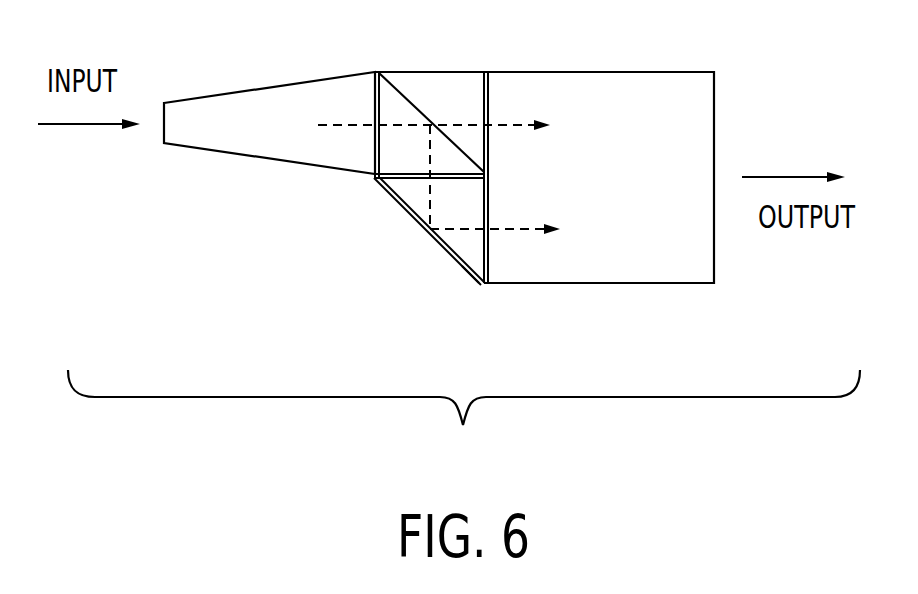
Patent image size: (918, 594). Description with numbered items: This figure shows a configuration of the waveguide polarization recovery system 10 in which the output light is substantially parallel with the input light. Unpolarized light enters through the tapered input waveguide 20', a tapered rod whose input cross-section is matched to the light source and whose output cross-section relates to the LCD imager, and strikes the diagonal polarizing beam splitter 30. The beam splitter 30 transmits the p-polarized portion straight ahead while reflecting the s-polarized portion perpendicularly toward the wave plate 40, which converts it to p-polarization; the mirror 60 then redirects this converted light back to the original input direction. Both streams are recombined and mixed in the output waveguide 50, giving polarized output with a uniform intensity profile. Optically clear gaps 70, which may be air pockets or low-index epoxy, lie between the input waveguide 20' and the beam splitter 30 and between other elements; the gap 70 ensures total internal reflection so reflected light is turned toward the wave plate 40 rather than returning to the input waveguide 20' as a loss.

The waveguide polarization recovery system 10 is at (464, 422).
The tapered input waveguide 20' is at (269, 160).
The polarizing beam splitter 30 is at (430, 125).
The wave plate 40 is at (411, 181).
The output waveguide 50 is at (618, 283).
The mirror 60 is at (470, 283).
The gap 70 is at (375, 98).